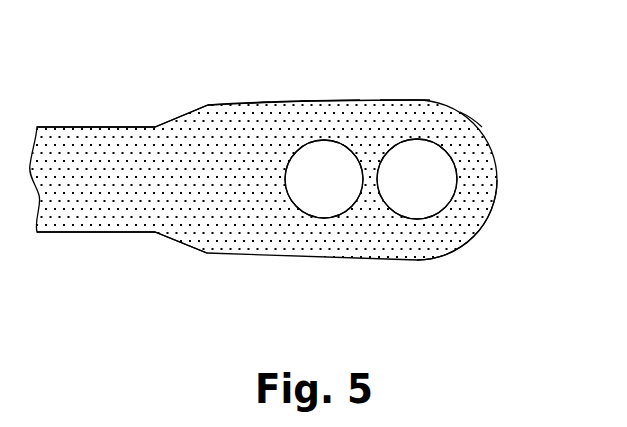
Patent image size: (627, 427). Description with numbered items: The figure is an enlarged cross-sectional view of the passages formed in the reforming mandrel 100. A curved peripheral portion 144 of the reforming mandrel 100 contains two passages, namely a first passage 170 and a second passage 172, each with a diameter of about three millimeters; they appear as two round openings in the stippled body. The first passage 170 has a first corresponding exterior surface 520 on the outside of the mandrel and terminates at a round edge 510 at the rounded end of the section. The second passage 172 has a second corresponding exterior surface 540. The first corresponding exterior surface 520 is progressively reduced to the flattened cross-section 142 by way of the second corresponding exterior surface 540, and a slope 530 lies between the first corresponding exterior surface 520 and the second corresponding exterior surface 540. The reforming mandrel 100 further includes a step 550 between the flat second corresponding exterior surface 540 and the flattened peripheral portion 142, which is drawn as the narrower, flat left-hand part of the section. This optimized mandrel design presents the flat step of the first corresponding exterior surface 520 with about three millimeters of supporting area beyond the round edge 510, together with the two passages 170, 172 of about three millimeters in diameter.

The reforming mandrel 100 is at (530, 172).
The flattened cross-section 142 is at (83, 125).
The curved peripheral portion 144 is at (207, 105).
The first passage 170 is at (422, 205).
The second passage 172 is at (333, 202).
The round edge 510 is at (490, 225).
The first corresponding exterior surface 520 is at (405, 100).
The slope 530 is at (323, 100).
The second corresponding exterior surface 540 is at (273, 104).
The step 550 is at (175, 118).